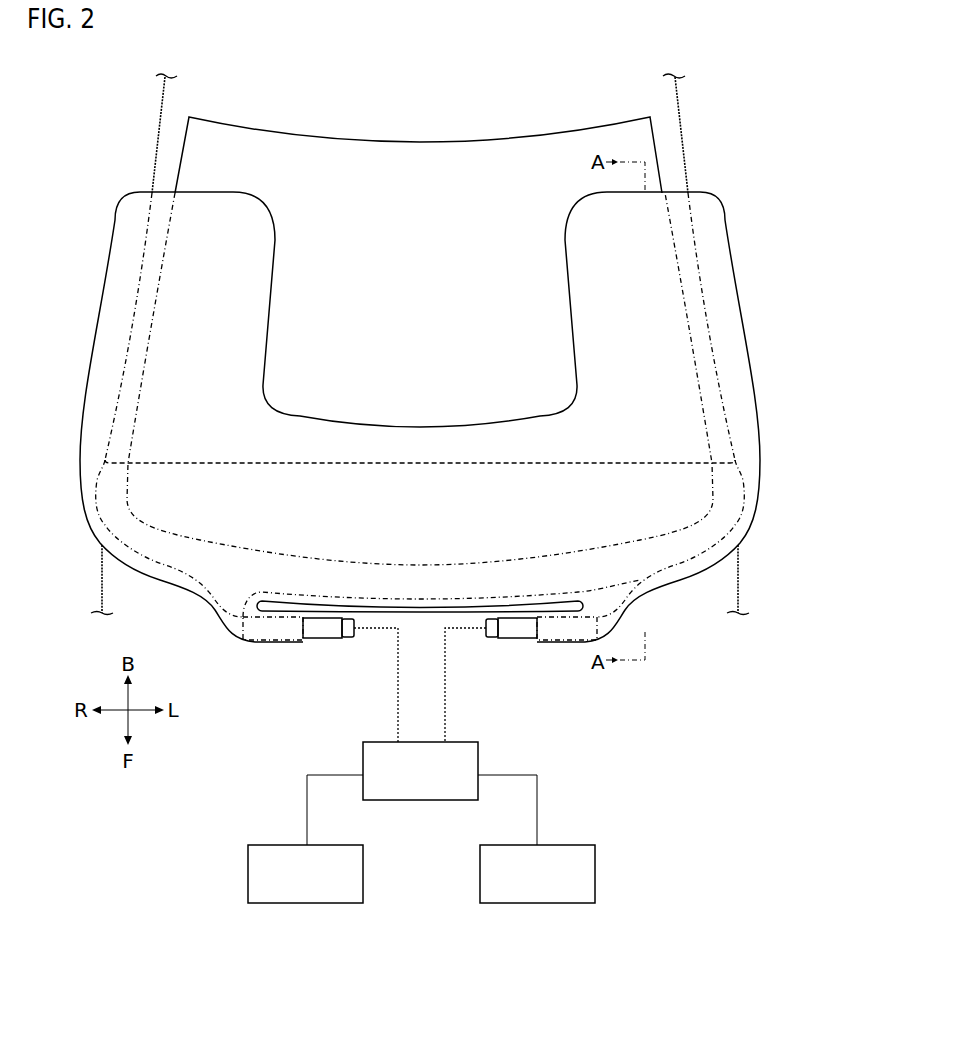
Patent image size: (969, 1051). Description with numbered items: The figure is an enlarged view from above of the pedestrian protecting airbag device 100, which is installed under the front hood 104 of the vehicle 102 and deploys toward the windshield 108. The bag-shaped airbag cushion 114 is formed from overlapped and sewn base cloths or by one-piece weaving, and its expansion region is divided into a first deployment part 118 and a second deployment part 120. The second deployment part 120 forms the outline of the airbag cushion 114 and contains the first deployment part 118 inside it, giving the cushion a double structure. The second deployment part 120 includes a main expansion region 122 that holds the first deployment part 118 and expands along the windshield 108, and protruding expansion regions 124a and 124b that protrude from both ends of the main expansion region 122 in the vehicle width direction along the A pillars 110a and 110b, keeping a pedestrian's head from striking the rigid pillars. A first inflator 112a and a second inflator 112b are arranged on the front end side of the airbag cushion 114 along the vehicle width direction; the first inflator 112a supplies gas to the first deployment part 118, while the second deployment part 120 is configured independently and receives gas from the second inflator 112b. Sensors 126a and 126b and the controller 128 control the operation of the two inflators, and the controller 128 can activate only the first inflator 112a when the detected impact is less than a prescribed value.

The pedestrian protecting airbag device 100 is at (110, 160).
The vehicle 102 is at (682, 88).
The front hood 104 is at (715, 591).
The windshield 108 is at (525, 148).
The A pillar 110a is at (678, 153).
The A pillar 110b is at (172, 160).
The first inflator 112a is at (326, 640).
The second inflator 112b is at (510, 640).
The airbag cushion 114 is at (117, 213).
The first deployment part 118 is at (660, 563).
The second deployment part 120 is at (742, 428).
The main expansion region 122 is at (470, 432).
The protruding expansion region 124a is at (733, 289).
The protruding expansion region 124b is at (103, 296).
The sensor 126a is at (597, 873).
The sensor 126b is at (366, 873).
The controller 128 is at (479, 756).